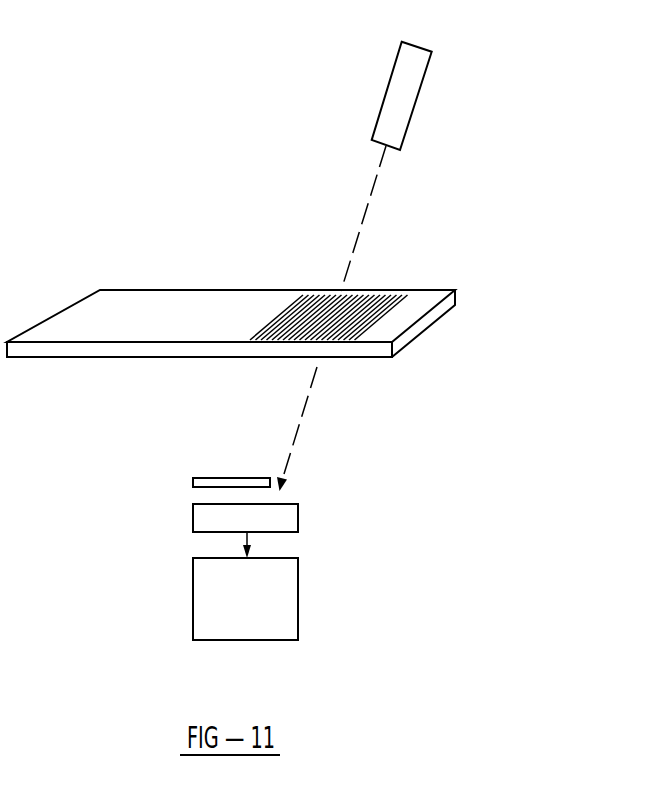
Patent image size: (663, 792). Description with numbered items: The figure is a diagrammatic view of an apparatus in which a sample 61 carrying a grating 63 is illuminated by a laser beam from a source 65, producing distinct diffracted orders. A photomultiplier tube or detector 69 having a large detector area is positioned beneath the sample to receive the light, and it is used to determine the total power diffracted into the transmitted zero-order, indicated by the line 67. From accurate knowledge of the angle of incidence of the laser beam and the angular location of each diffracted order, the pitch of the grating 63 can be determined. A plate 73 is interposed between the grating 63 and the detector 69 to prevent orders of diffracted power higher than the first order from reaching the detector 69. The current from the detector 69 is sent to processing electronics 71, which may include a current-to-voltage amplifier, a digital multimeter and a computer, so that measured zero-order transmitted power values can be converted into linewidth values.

The sample 61 is at (437, 320).
The grating 63 is at (372, 305).
The source 65 is at (380, 118).
The transmitted zero-order 67 is at (303, 420).
The detector 69 is at (300, 517).
The processing electronics 71 is at (293, 597).
The plate 73 is at (217, 477).